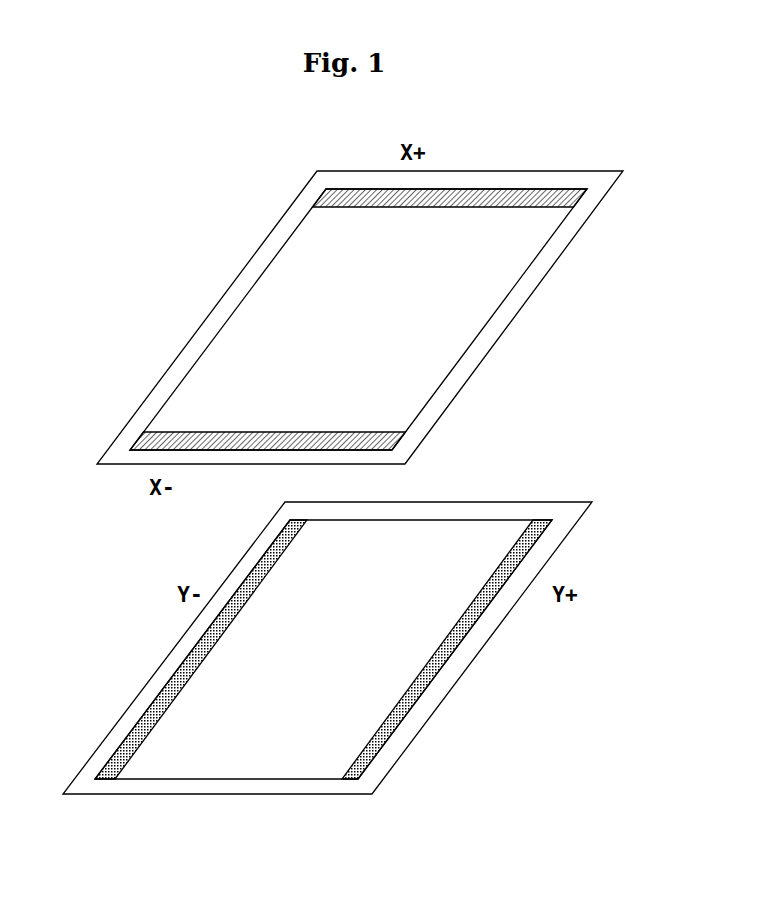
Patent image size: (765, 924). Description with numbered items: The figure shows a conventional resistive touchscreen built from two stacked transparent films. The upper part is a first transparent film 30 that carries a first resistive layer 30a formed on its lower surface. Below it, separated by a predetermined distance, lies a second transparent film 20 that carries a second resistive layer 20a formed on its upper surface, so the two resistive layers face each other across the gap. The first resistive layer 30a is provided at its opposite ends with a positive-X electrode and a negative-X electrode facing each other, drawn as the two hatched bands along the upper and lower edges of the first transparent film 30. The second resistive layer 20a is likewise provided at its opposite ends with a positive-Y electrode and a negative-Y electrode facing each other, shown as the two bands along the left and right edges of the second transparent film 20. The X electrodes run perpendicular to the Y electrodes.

The first transparent film 30 is at (440, 172).
The first resistive layer 30a is at (507, 284).
The second transparent film 20 is at (407, 503).
The second resistive layer 20a is at (500, 525).